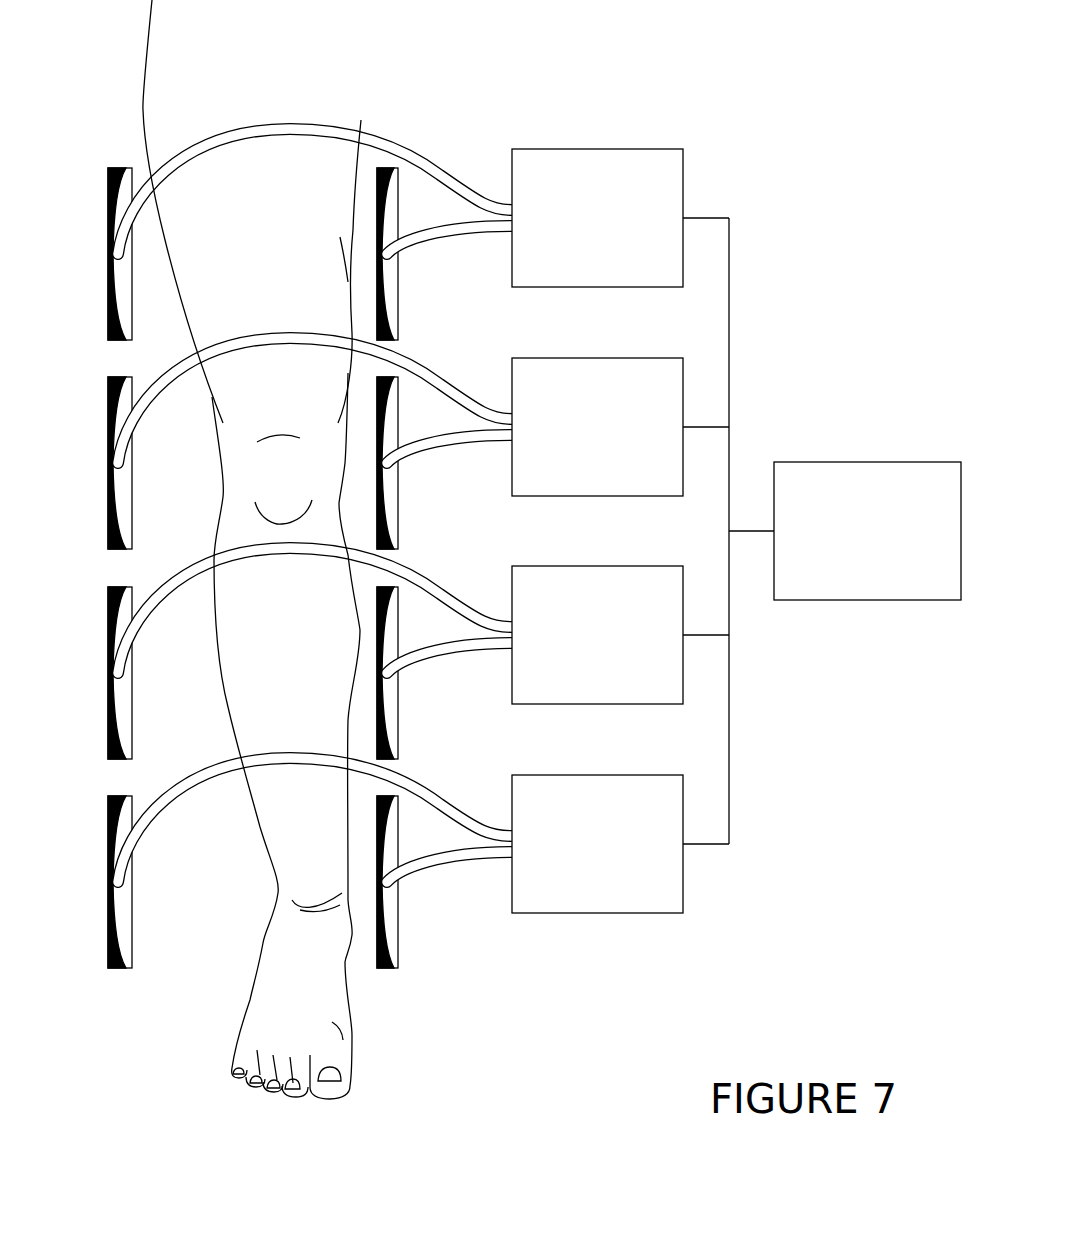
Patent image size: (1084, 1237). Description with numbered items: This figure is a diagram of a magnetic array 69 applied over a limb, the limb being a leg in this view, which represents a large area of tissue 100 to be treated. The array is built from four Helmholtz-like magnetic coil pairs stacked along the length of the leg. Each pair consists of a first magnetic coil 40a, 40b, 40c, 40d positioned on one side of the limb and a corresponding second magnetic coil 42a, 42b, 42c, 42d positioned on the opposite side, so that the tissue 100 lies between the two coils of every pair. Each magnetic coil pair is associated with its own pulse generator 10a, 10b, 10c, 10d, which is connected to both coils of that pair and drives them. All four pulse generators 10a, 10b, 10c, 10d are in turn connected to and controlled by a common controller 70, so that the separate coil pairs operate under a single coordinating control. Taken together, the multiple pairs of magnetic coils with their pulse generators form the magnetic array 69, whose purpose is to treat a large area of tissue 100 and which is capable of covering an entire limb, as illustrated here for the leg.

The magnetic array 69 is at (440, 88).
The tissue 100 is at (170, 93).
The common controller 70 is at (863, 462).
The pulse generator 10a is at (597, 774).
The pulse generator 10b is at (597, 565).
The pulse generator 10c is at (597, 357).
The pulse generator 10d is at (597, 148).
The first magnetic coil 40a is at (108, 881).
The first magnetic coil 40b is at (108, 672).
The first magnetic coil 40c is at (108, 462).
The first magnetic coil 40d is at (108, 253).
The second magnetic coil 42a is at (398, 920).
The second magnetic coil 42b is at (398, 711).
The second magnetic coil 42c is at (398, 501).
The second magnetic coil 42d is at (398, 292).